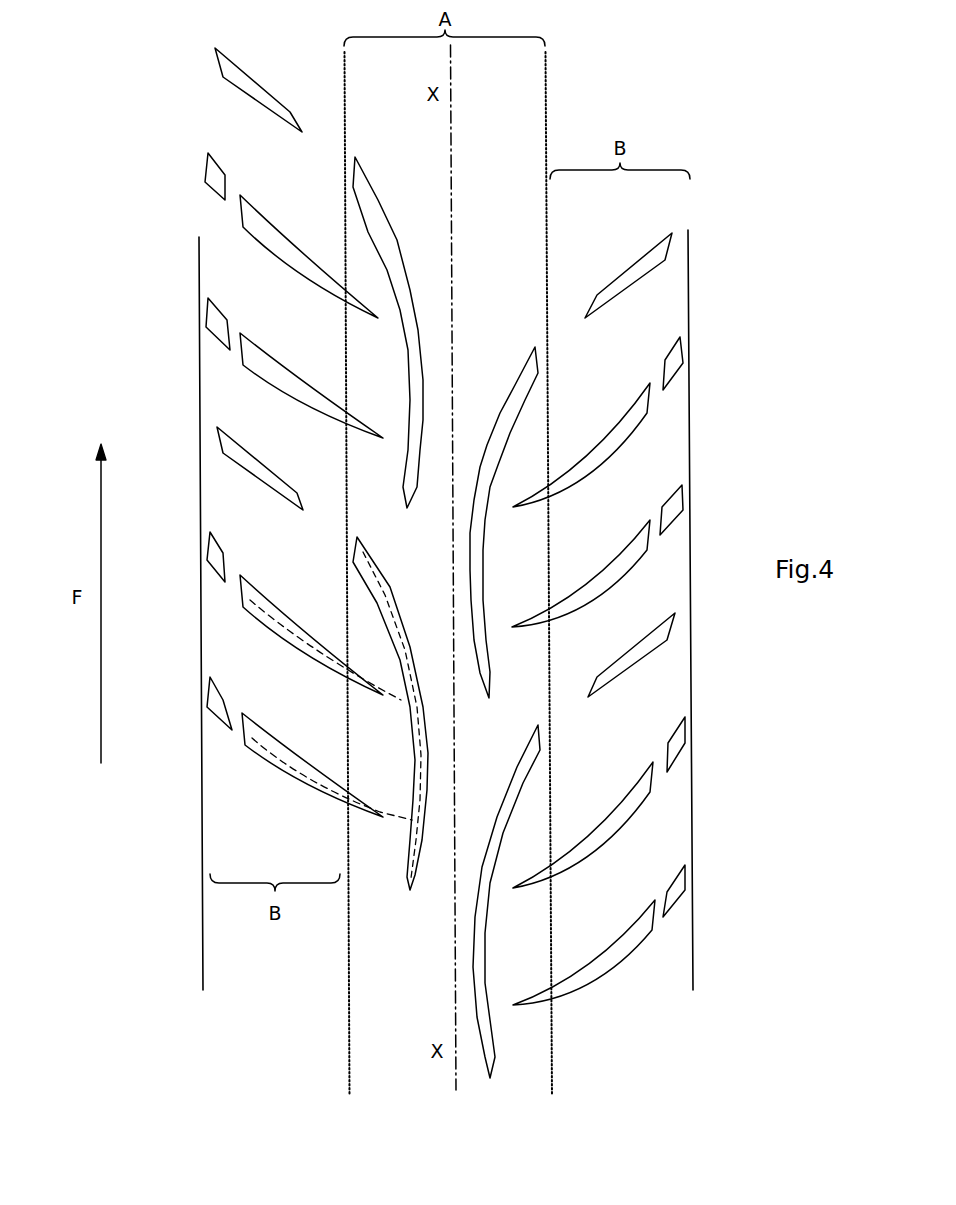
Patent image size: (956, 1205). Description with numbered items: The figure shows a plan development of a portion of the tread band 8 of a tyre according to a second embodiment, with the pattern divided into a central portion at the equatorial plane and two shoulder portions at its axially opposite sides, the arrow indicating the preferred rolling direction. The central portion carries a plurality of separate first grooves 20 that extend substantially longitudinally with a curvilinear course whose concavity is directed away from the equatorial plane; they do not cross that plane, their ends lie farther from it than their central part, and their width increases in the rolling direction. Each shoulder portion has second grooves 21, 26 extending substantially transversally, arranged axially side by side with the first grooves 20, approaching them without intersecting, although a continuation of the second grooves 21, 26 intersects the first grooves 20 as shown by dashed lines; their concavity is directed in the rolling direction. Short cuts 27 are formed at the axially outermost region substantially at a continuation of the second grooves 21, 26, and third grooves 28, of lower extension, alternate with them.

The tread band 8 is at (766, 104).
The first grooves 20 is at (498, 443).
The second grooves 21 is at (295, 267).
The second grooves 26 is at (597, 447).
The short cuts 27 is at (218, 172).
The third grooves 28 is at (275, 95).